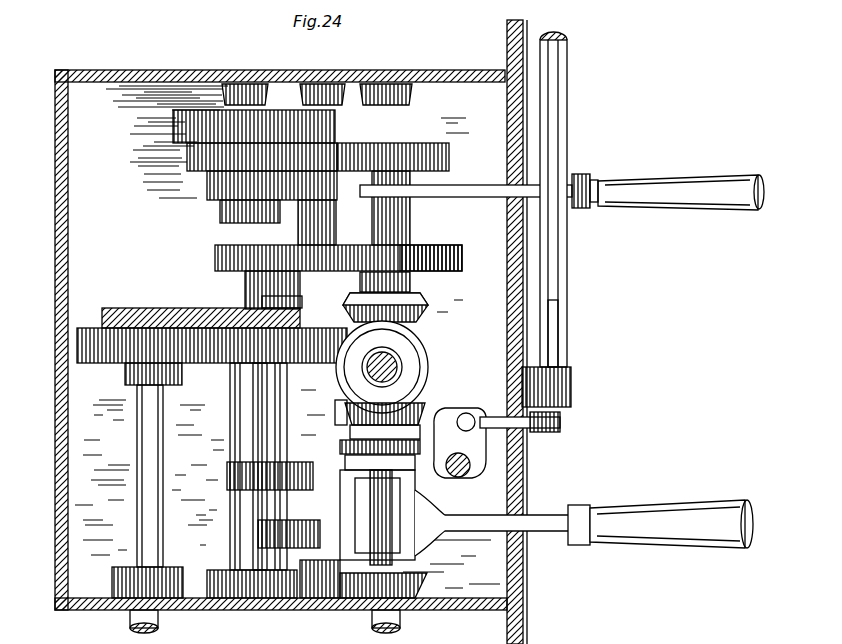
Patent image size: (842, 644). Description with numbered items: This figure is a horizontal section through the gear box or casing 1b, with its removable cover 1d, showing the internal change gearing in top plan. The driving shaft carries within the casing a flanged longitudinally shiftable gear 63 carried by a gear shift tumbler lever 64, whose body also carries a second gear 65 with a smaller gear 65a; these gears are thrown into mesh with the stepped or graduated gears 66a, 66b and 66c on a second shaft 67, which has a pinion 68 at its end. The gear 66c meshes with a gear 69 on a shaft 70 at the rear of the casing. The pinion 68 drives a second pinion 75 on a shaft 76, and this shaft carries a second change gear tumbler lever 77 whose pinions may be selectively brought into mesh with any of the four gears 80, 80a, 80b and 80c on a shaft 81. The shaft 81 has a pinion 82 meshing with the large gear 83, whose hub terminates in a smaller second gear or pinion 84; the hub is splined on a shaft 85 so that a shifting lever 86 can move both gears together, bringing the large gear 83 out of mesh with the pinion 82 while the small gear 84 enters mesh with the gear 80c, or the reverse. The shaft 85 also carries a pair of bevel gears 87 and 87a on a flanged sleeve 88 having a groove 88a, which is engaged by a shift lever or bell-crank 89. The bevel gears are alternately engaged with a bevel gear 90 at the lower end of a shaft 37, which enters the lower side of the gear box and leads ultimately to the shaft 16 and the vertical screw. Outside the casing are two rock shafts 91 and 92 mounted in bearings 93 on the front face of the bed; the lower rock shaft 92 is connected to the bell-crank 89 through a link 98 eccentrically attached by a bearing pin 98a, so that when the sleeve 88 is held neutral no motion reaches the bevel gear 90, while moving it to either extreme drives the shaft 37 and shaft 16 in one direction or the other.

The gear box or casing 1b is at (456, 611).
The removable cover 1d is at (524, 479).
The shaft 16 is at (227, 84).
The shaft 37 is at (347, 410).
The flanged longitudinally shiftable gear 63 is at (415, 550).
The gear shift tumbler lever 64 is at (612, 541).
The second gear 65 is at (318, 598).
The smaller gear 65a is at (360, 612).
The stepped gear 66a is at (258, 535).
The stepped gear 66b is at (305, 462).
The stepped gear 66c is at (340, 364).
The second shaft 67 is at (283, 400).
The pinion 68 is at (262, 300).
The gear 69 is at (125, 374).
The shaft 70 is at (137, 452).
The second pinion 75 is at (300, 318).
The shaft 76 is at (336, 232).
The second change gear tumbler lever 77 is at (640, 183).
The gear 80 is at (220, 213).
The gear 80a is at (207, 185).
The gear 80b is at (187, 158).
The gear 80c is at (173, 126).
The shaft 81 is at (245, 280).
The pinion 82 is at (215, 252).
The large gear 83 is at (462, 258).
The second gear or pinion 84 is at (449, 160).
The shaft 85 is at (410, 280).
The shifting lever 86 is at (578, 174).
The bevel gear 87 is at (420, 408).
The bevel gear 87a is at (422, 320).
The flanged sleeve 88 is at (420, 378).
The groove 88a is at (362, 445).
The shift lever or bell-crank 89 is at (437, 440).
The bevel gear 90 is at (397, 367).
The rock shaft 91 is at (567, 113).
The second or lower rock shaft 92 is at (560, 338).
The bearings 93 is at (571, 388).
The link 98 is at (488, 417).
The bearing pin 98a is at (548, 434).